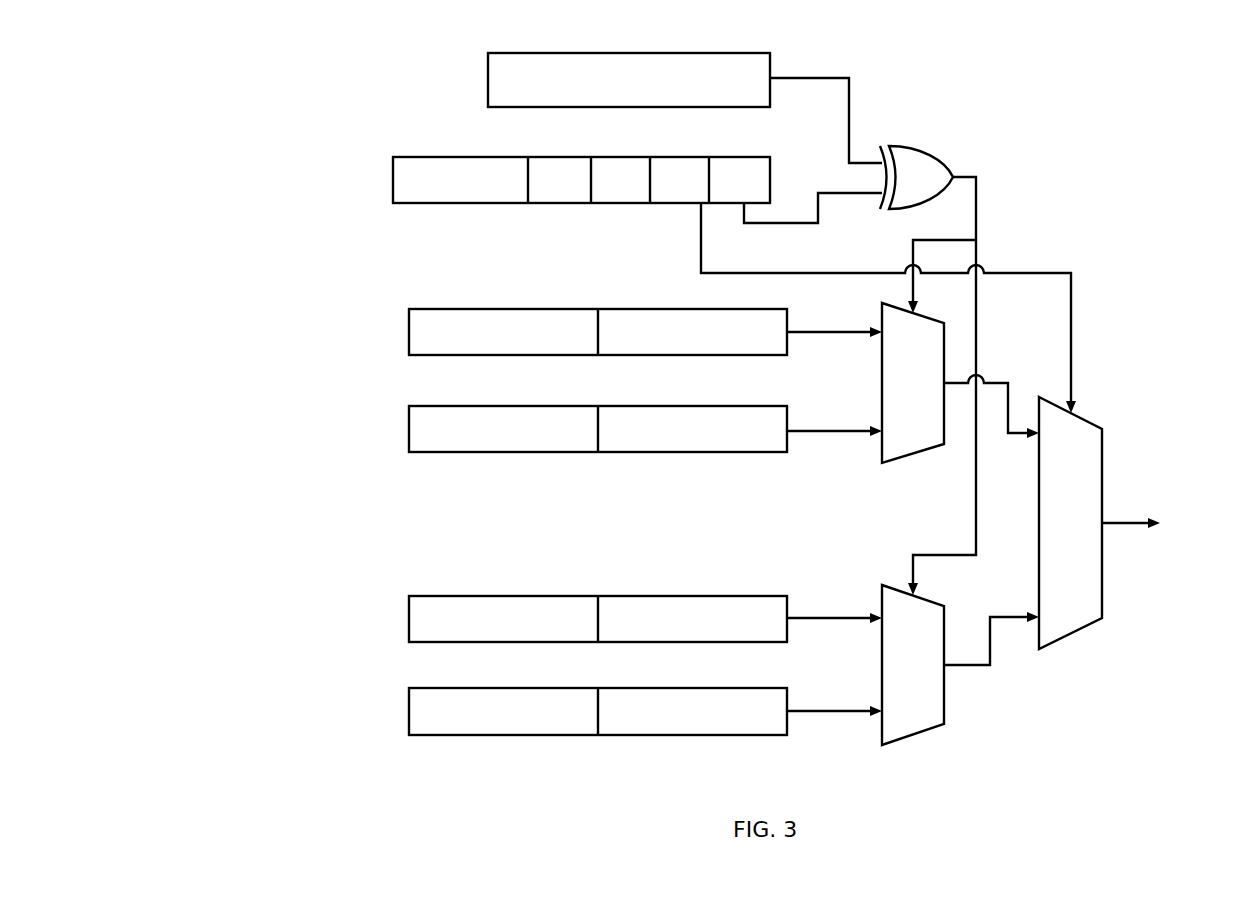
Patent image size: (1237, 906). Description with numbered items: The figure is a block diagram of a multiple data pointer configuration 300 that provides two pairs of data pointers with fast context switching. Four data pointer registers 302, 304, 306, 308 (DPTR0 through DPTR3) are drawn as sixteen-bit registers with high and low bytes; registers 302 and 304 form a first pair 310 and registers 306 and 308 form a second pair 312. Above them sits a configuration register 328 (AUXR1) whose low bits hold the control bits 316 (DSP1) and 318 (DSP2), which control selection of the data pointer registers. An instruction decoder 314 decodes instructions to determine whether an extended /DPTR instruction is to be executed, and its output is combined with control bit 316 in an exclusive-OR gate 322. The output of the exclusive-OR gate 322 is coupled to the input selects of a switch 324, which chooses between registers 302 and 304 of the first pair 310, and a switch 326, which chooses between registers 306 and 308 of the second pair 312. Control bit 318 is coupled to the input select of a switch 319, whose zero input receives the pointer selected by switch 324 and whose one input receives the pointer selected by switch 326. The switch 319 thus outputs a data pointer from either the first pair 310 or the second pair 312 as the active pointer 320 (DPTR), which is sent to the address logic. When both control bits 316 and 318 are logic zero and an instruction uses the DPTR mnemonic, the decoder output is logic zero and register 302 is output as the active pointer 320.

The multiple data pointer configuration 300 is at (231, 85).
The data pointer register DPTR0 302 is at (409, 309).
The data pointer register DPTR1 304 is at (409, 406).
The data pointer register DPTR2 306 is at (409, 596).
The data pointer register DPTR3 308 is at (409, 688).
The first pair 310 is at (319, 373).
The second pair 312 is at (319, 653).
The instruction decoder 314 is at (488, 53).
The control bit DSP1 316 is at (746, 157).
The control bit DSP2 318 is at (677, 203).
The switch 319 is at (1102, 429).
The active pointer DPTR 320 is at (1120, 525).
The exclusive-OR gate 322 is at (925, 150).
The switch 324 is at (882, 463).
The switch 326 is at (882, 745).
The configuration register AUXR1 328 is at (393, 157).